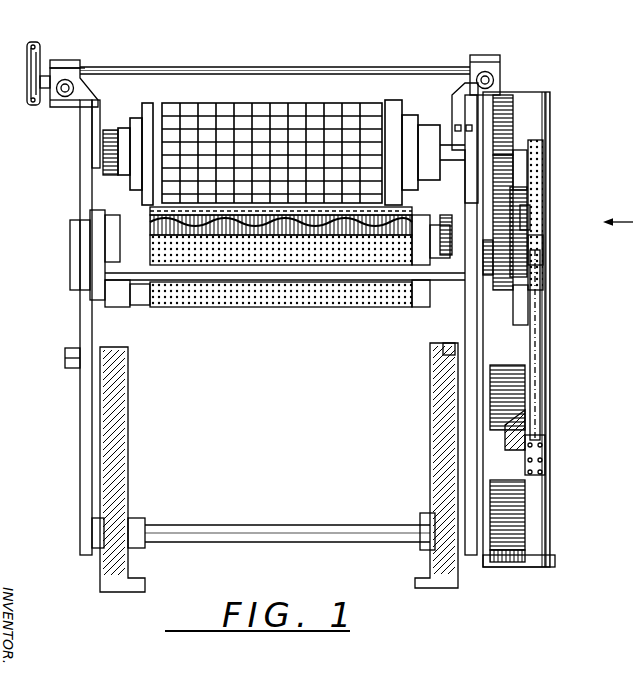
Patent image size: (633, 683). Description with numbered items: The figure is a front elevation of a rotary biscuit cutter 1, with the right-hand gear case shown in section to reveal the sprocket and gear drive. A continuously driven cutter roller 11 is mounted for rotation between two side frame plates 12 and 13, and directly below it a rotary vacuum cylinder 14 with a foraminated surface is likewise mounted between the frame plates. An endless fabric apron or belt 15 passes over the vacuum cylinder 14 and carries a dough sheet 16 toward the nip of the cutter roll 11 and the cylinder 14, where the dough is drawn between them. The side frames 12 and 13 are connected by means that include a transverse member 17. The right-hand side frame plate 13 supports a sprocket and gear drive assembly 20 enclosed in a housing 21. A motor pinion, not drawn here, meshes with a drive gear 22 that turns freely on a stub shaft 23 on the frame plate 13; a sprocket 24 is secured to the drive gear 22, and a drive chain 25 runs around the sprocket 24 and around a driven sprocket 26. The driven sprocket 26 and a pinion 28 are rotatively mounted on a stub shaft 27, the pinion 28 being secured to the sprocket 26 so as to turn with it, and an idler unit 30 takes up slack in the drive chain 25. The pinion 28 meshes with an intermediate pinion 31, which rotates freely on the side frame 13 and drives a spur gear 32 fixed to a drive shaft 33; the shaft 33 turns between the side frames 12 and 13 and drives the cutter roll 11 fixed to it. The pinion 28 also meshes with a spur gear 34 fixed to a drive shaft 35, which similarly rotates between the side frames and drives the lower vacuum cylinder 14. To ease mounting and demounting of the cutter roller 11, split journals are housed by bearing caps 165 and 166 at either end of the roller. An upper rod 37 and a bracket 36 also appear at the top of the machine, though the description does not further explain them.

The rotary biscuit cutter 1 is at (346, 310).
The cutter roller 11 is at (170, 110).
The side frame plate 12 is at (80, 321).
The side frame plate 13 is at (465, 318).
The rotary vacuum cylinder 14 is at (280, 304).
The endless fabric apron or belt 15 is at (162, 228).
The dough sheet 16 is at (160, 212).
The transverse member 17 is at (262, 524).
The sprocket and gear drive assembly 20 is at (522, 93).
The housing 21 is at (553, 540).
The drive gear 22 is at (518, 522).
The stub shaft 23 is at (536, 432).
The sprocket 24 is at (532, 446).
The drive chain 25 is at (538, 345).
The driven sprocket 26 is at (535, 175).
The stub shaft 27 is at (528, 215).
The pinion 28 is at (515, 205).
The idler unit 30 is at (526, 320).
The intermediate pinion 31 is at (512, 178).
The spur gear 32 is at (506, 160).
The drive shaft 33 is at (113, 130).
The spur gear 34 is at (540, 245).
The drive shaft 35 is at (491, 256).
The right adjusting gearbox 36 is at (460, 62).
The adjusting rod 37 is at (224, 66).
The bearing cap 165 is at (82, 113).
The bearing cap 166 is at (456, 105).